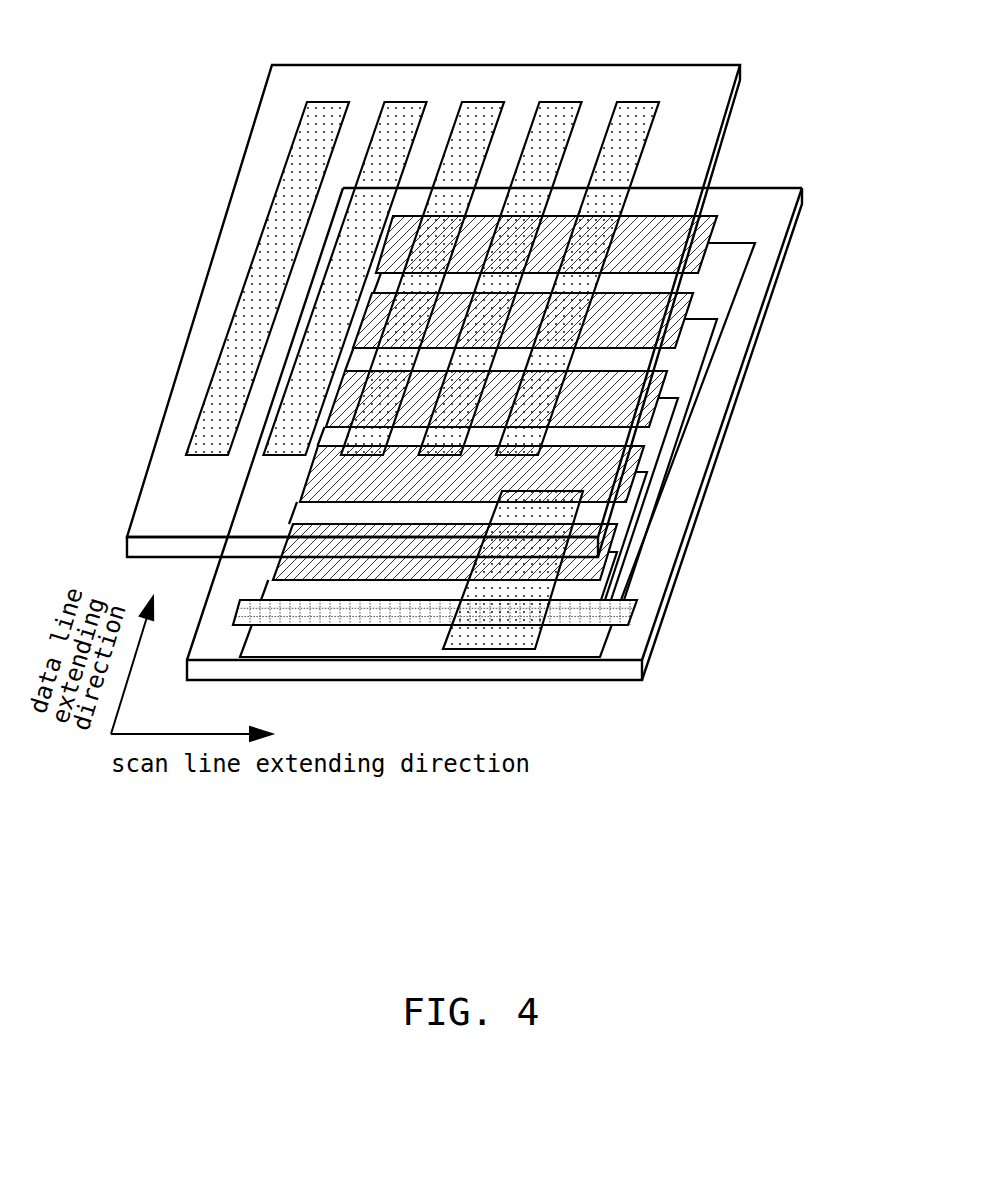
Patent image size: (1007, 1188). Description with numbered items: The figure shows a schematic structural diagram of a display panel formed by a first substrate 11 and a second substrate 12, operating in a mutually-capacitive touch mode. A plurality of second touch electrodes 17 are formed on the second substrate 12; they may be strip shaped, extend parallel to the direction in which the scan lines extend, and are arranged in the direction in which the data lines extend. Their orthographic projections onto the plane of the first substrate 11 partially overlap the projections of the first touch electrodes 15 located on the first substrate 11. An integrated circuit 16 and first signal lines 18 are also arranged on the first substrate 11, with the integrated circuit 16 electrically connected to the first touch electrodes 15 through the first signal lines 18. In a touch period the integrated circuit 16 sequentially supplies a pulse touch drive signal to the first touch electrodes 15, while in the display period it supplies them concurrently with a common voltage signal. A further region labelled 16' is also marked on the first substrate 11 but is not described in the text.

The first substrate 11 is at (795, 215).
The second substrate 12 is at (267, 83).
The first touch electrodes 15 is at (717, 190).
The integrated circuit 16 is at (484, 601).
The scan line region 16' is at (173, 580).
The second touch electrodes 17 is at (637, 101).
The first signal lines 18 is at (705, 372).